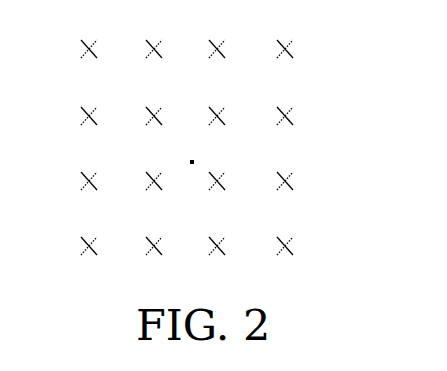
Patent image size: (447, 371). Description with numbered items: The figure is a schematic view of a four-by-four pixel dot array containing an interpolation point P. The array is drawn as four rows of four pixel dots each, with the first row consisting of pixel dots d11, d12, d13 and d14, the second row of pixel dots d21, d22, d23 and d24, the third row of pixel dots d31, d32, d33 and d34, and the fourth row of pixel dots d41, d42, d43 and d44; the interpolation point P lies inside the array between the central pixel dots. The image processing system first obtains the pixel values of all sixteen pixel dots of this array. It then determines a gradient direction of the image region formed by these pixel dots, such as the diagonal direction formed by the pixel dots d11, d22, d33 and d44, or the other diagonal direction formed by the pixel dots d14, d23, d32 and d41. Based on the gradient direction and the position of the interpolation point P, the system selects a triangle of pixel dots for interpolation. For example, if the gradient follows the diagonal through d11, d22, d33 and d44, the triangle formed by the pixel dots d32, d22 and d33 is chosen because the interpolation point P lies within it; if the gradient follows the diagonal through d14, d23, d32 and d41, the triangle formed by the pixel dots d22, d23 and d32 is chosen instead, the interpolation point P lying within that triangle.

The pixel dot d11 is at (102, 60).
The pixel dot d12 is at (165, 60).
The pixel dot d13 is at (230, 60).
The pixel dot d14 is at (298, 60).
The pixel dot d21 is at (102, 126).
The pixel dot d22 is at (165, 126).
The pixel dot d23 is at (230, 126).
The pixel dot d24 is at (298, 126).
The pixel dot d31 is at (102, 190).
The pixel dot d32 is at (165, 190).
The pixel dot d33 is at (230, 190).
The pixel dot d34 is at (298, 190).
The pixel dot d41 is at (102, 256).
The pixel dot d42 is at (230, 256).
The pixel dot d43 is at (165, 256).
The pixel dot d44 is at (298, 256).
The interpolation point P is at (187, 158).